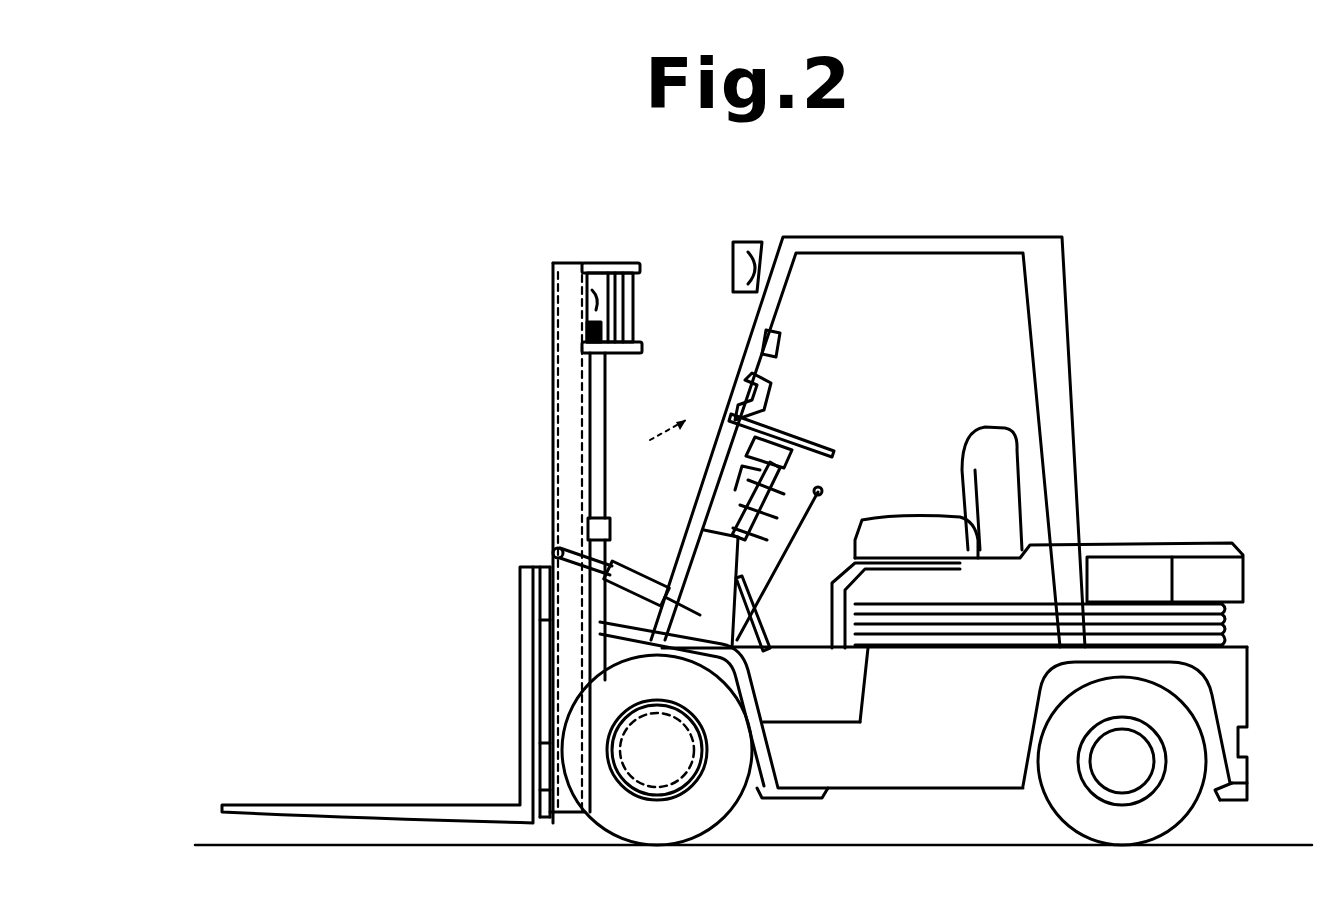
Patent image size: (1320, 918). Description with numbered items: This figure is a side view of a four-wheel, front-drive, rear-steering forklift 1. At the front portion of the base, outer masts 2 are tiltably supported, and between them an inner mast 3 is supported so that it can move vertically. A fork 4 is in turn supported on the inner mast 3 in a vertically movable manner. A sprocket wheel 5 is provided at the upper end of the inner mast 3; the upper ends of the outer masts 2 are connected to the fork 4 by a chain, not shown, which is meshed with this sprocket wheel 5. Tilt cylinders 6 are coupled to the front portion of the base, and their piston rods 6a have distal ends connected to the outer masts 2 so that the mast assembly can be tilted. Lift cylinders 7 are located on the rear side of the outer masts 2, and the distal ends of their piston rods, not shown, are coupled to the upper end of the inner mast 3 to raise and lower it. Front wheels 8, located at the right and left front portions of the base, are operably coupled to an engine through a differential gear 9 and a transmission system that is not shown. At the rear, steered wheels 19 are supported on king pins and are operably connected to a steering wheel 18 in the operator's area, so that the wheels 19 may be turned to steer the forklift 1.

The forklift 1 is at (1147, 272).
The outer masts 2 is at (550, 318).
The inner mast 3 is at (550, 265).
The fork 4 is at (326, 805).
The sprocket wheel 5 is at (612, 300).
The tilt cylinders 6 is at (652, 578).
The piston rods 6a is at (600, 540).
The lift cylinders 7 is at (598, 382).
The front wheels 8 is at (600, 846).
The differential gear 9 is at (637, 714).
The steering wheel 18 is at (846, 430).
The steered wheels 19 is at (1172, 818).